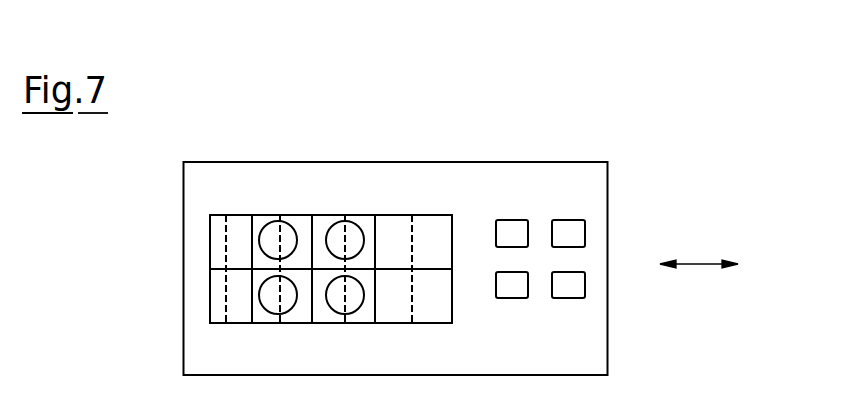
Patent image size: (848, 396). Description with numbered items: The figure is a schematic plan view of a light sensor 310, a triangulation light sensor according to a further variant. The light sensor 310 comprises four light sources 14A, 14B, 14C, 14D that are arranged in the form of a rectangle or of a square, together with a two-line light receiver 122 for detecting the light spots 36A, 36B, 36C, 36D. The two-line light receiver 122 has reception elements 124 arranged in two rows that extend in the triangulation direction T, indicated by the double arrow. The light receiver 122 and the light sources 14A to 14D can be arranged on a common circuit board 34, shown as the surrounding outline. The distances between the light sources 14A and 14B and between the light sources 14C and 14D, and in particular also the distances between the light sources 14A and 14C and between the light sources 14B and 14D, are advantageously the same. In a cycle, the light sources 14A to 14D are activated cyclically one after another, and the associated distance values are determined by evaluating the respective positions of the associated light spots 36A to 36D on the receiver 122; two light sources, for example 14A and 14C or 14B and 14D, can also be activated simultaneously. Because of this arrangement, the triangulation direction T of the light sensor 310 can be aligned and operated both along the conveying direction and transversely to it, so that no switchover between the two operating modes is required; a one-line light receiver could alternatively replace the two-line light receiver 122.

The light sensor 310 is at (493, 94).
The common circuit board 34 is at (298, 162).
The two-line light receiver 122 is at (210, 283).
The reception elements 124 is at (213, 288).
The light spot 36A is at (270, 238).
The light spot 36B is at (347, 238).
The light spot 36C is at (272, 300).
The light spot 36D is at (342, 300).
The light source 14A is at (508, 230).
The light source 14B is at (560, 237).
The light source 14C is at (510, 285).
The light source 14D is at (562, 285).
The triangulation direction T is at (699, 281).